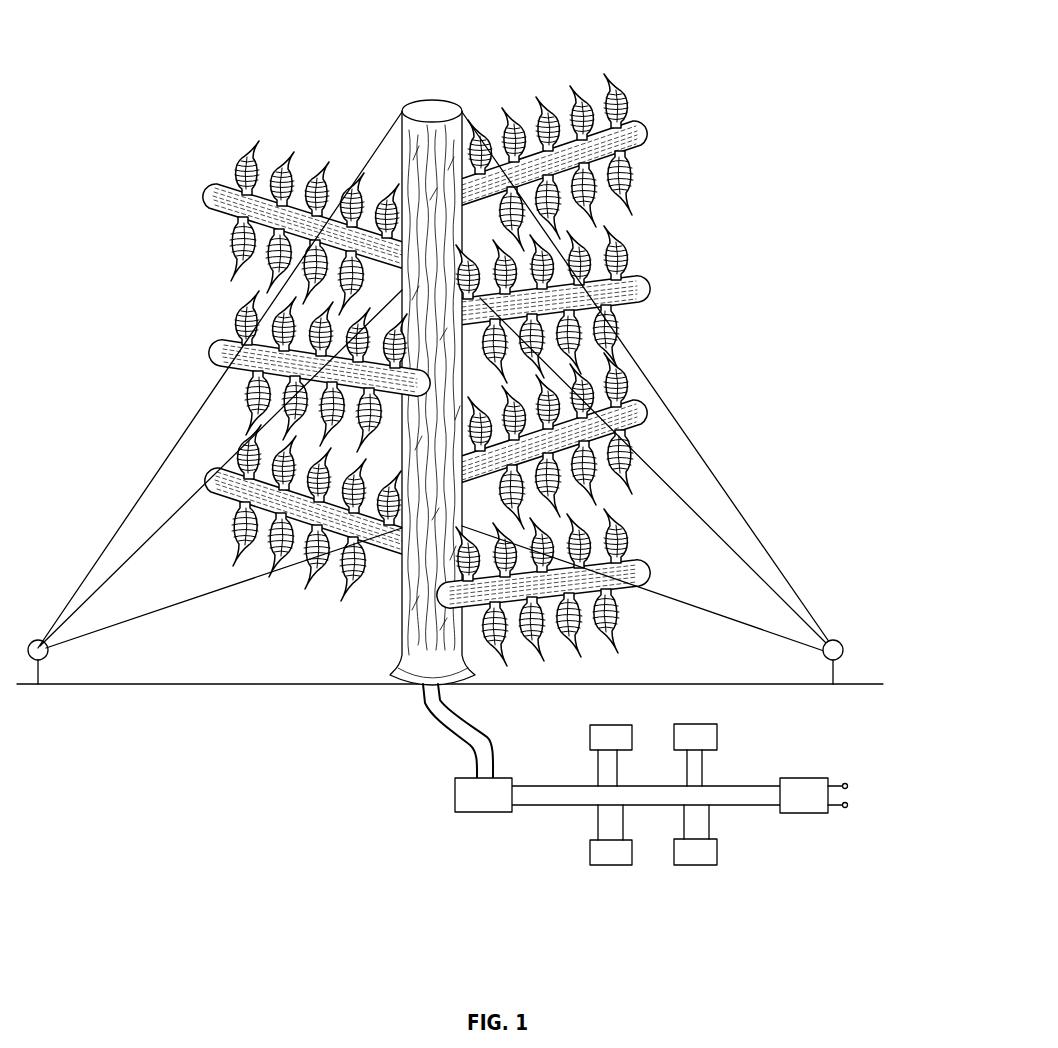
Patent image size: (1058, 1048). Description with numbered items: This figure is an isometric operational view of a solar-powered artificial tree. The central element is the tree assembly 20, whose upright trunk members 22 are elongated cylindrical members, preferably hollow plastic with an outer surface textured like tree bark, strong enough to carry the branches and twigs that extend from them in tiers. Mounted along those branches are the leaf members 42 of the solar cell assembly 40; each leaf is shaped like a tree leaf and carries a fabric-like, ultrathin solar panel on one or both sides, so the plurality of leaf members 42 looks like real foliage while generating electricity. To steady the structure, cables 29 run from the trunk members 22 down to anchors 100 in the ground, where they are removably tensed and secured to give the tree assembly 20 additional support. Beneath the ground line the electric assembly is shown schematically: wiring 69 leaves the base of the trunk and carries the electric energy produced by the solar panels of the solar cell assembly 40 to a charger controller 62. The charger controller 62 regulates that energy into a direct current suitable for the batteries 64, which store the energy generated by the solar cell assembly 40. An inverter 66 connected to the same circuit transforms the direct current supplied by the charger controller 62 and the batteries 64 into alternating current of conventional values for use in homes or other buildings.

The tree assembly 20 is at (430, 105).
The trunk members 22 is at (405, 595).
The cables 29 is at (655, 378).
The solar cell assembly 40 is at (610, 78).
The leaf members 42 is at (266, 135).
The anchors 100 is at (843, 652).
The wiring 69 is at (443, 733).
The charger controller 62 is at (468, 813).
The batteries 64 is at (604, 725).
The inverter 66 is at (805, 778).